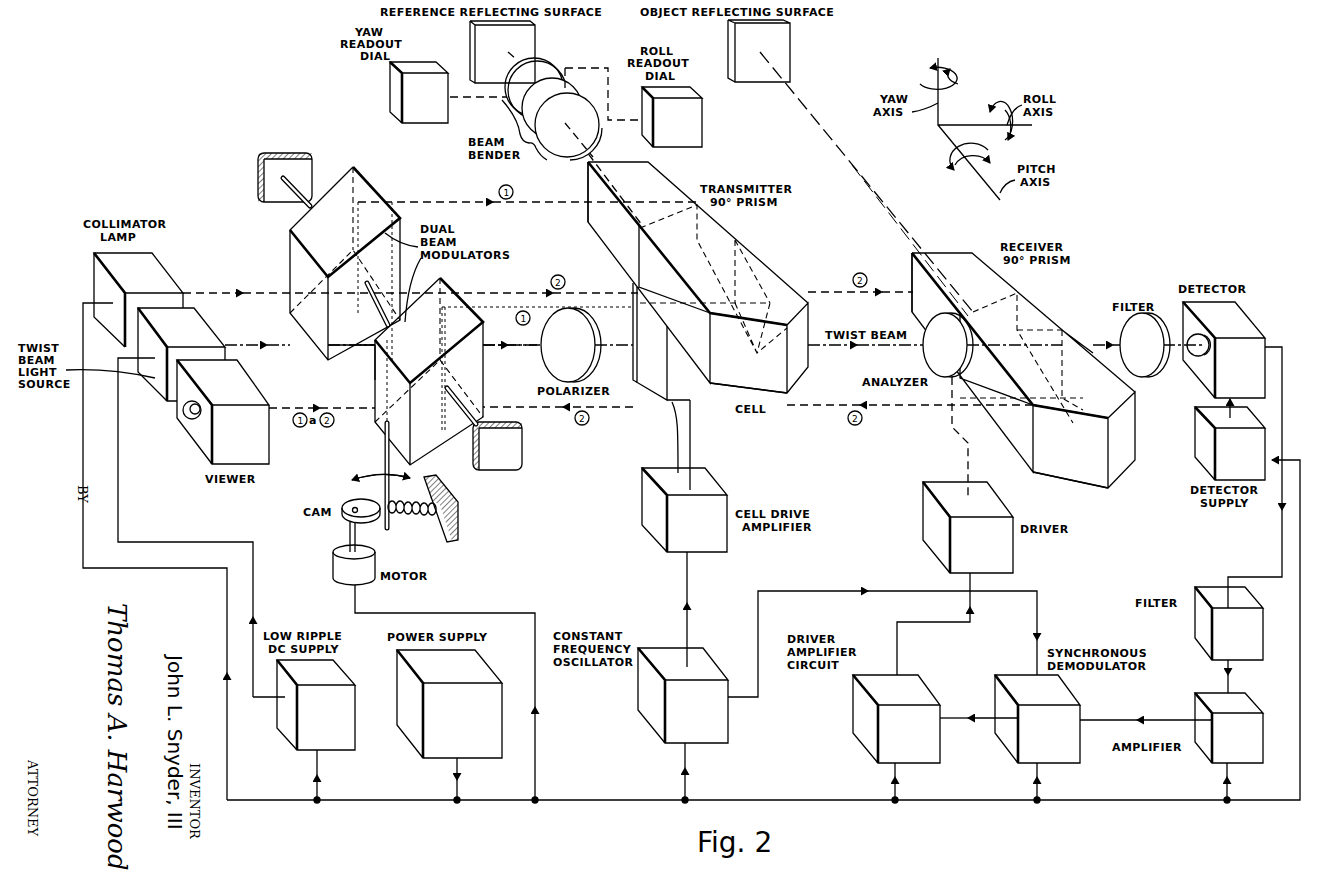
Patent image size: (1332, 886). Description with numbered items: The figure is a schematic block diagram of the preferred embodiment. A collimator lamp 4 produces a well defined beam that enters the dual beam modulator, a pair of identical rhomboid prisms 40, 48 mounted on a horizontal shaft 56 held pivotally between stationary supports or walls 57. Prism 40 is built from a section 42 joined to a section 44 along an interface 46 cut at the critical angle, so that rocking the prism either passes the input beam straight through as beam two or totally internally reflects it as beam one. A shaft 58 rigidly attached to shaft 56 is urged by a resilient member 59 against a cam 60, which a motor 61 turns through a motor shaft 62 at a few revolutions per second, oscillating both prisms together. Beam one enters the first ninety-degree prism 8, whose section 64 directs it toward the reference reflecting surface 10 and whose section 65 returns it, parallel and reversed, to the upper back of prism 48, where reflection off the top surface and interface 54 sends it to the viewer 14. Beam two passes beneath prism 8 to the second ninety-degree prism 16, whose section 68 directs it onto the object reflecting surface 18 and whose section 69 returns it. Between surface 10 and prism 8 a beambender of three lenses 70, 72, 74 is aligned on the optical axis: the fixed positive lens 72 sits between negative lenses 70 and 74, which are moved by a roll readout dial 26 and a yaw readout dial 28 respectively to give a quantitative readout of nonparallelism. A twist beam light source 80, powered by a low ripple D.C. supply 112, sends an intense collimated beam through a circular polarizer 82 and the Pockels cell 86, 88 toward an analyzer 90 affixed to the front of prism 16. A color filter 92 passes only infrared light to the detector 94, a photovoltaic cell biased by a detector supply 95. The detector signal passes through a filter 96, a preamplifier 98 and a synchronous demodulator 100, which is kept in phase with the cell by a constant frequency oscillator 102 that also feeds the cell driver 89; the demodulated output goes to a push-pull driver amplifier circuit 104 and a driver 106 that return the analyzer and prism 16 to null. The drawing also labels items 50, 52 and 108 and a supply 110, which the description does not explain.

The collimator lamp 4 is at (155, 268).
The twist beam light source 80 is at (200, 327).
The viewer 14 is at (247, 387).
The stationary supports or walls 57 is at (285, 150).
The section 42 is at (290, 228).
The prism 40 is at (399, 189).
The horizontal shaft 56 is at (388, 273).
The second modulator prism 52 is at (450, 457).
The prism face 50 is at (380, 382).
The interface surface 46 is at (347, 365).
The section 44 is at (370, 360).
The prism 48 is at (512, 338).
The interface 54 is at (478, 417).
The shaft 58 is at (385, 445).
The resilient member 59 is at (417, 503).
The cam 60 is at (362, 500).
The motor shaft 62 is at (350, 533).
The motor 61 is at (333, 565).
The circular polarizer 82 is at (545, 358).
The cell 86 is at (636, 325).
The Pockels cell 88 is at (672, 405).
The first 90° prism 8 is at (781, 255).
The section 64 is at (607, 242).
The section 65 is at (777, 388).
The reference reflecting surface 10 is at (527, 32).
The object reflecting surface 18 is at (787, 50).
The lens 74 is at (540, 58).
The positive focal length lens 72 is at (577, 78).
The lens 70 is at (597, 138).
The yaw readout dial 28 is at (425, 115).
The roll readout dial 26 is at (700, 132).
The second 90° prism 16 is at (1088, 319).
The section 68 is at (913, 300).
The section 69 is at (1063, 472).
The analyzer 90 is at (932, 356).
The drive connection 108 is at (967, 443).
The color filter 92 is at (1145, 365).
The detector 94 is at (1248, 327).
The detector supply 95 is at (1203, 438).
The filter 96 is at (1252, 632).
The preamplifier 98 is at (1252, 722).
The synchronous demodulator 100 is at (1062, 757).
The push-pull amplifier driver circuit 104 is at (922, 757).
The driver 106 is at (1010, 557).
The constant frequency oscillator 102 is at (712, 737).
The cell driver 89 is at (705, 547).
The power supply 110 is at (485, 753).
The low ripple D.C. supply 112 is at (337, 747).